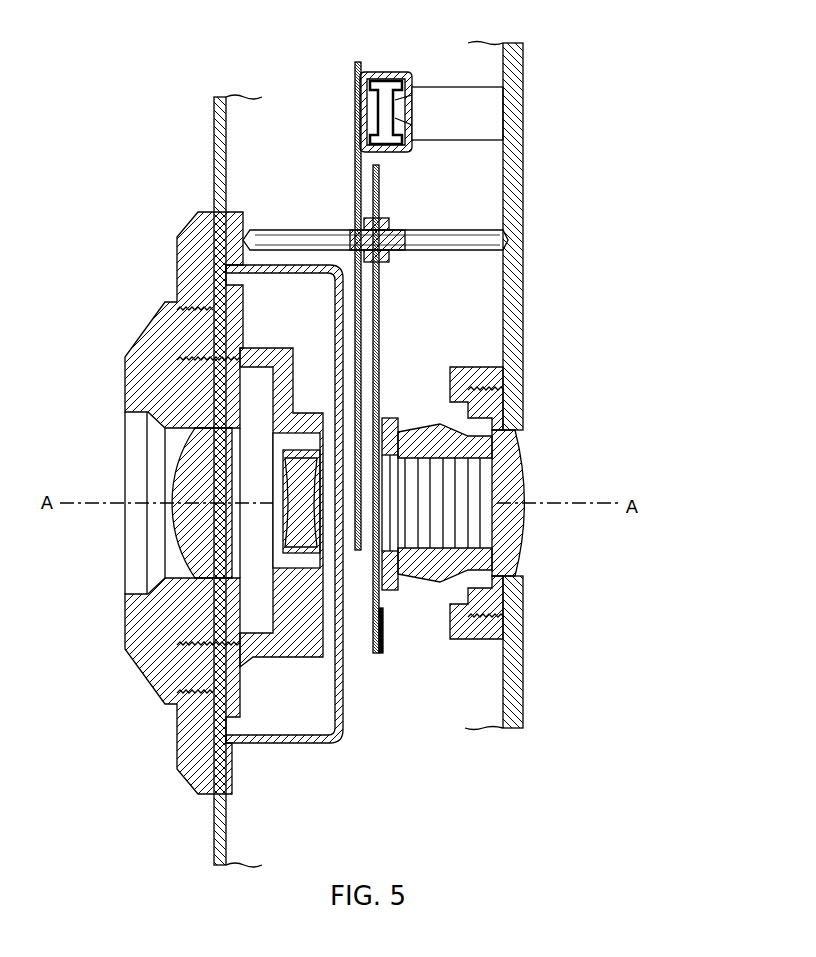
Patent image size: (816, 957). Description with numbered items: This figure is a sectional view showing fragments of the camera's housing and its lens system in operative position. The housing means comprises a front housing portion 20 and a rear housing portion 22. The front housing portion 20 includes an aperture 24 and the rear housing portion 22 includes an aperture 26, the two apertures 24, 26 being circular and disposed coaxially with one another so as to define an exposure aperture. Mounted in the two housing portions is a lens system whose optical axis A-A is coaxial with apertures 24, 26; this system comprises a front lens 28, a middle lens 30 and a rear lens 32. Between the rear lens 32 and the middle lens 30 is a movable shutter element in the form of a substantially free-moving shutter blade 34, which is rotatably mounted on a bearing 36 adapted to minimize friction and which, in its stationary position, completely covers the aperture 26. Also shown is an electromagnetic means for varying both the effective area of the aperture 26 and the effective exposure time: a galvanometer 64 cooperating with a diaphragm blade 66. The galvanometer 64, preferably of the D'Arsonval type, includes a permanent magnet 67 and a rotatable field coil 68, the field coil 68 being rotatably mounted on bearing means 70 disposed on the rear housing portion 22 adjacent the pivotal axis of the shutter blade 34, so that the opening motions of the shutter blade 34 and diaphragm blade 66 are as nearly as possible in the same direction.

The front housing portion 20 is at (120, 389).
The rear housing portion 22 is at (518, 172).
The aperture 24 is at (290, 389).
The aperture 26 is at (441, 429).
The front lens 28 is at (205, 528).
The middle lens 30 is at (290, 530).
The rear lens 32 is at (518, 548).
The shutter blade 34 is at (372, 602).
The bearing 36 is at (464, 230).
The galvanometer 64 is at (358, 61).
The diaphragm blade 66 is at (353, 180).
The permanent magnet 67 is at (385, 93).
The field coil 68 is at (411, 78).
The bearing means 70 is at (405, 120).